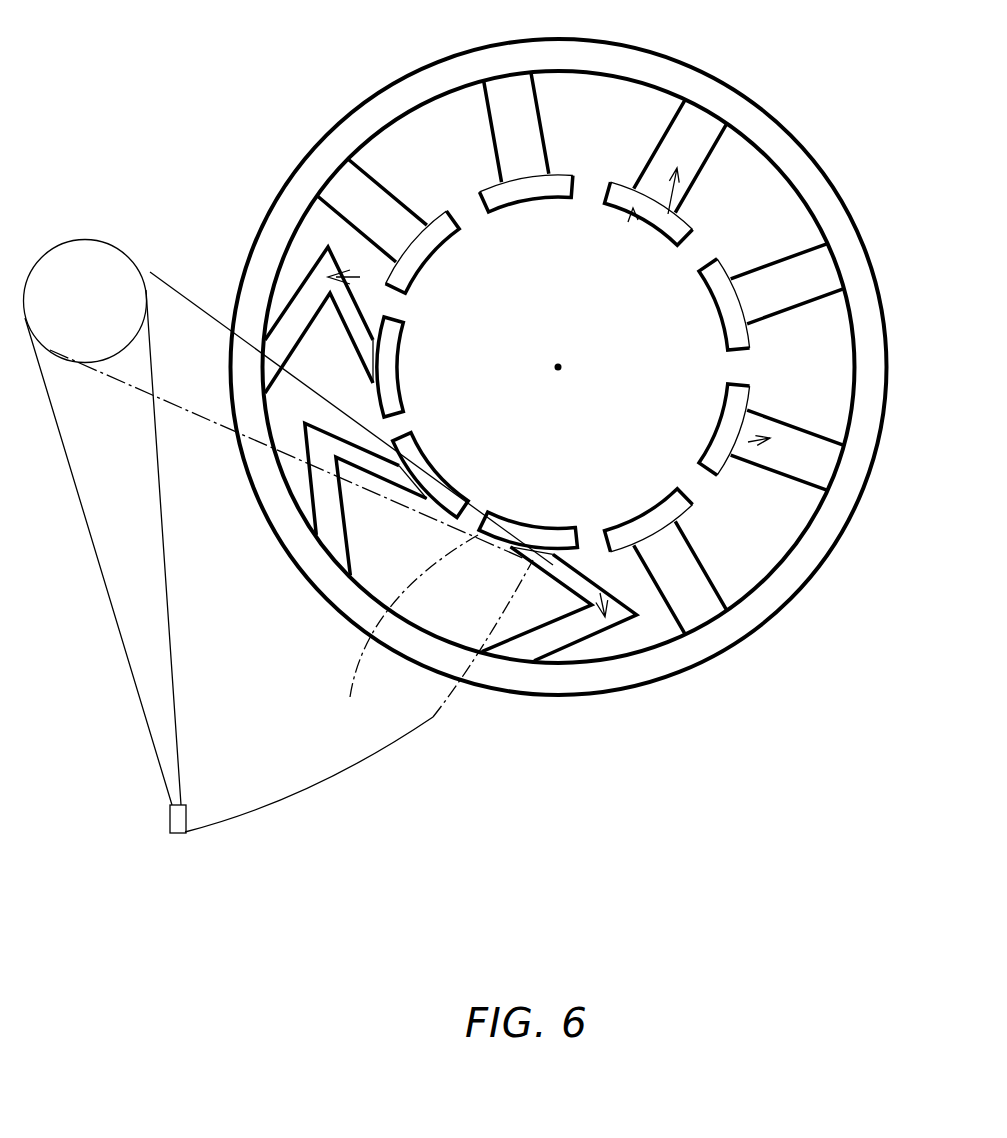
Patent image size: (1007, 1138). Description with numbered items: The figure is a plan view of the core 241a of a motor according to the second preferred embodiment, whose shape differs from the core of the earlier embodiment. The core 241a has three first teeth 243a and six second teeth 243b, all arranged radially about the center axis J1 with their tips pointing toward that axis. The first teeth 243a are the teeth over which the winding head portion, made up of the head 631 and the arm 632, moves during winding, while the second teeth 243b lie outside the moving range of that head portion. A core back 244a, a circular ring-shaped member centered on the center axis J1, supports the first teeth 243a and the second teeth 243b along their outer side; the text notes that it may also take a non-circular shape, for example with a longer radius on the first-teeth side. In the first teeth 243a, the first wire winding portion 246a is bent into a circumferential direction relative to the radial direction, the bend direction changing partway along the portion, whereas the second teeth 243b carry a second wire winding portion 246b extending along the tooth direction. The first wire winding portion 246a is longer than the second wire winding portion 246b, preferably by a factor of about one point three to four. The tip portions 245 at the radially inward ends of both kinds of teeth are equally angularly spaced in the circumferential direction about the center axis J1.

The core 241a is at (274, 40).
The first teeth 243a is at (295, 283).
The second teeth 243b is at (369, 178).
The core back 244a is at (632, 690).
The tip portions 245 is at (383, 363).
The first wire winding portion 246a is at (360, 277).
The second wire winding portion 246b is at (633, 208).
The center axis J1 is at (560, 372).
The head 631 is at (453, 736).
The arm 632 is at (350, 697).